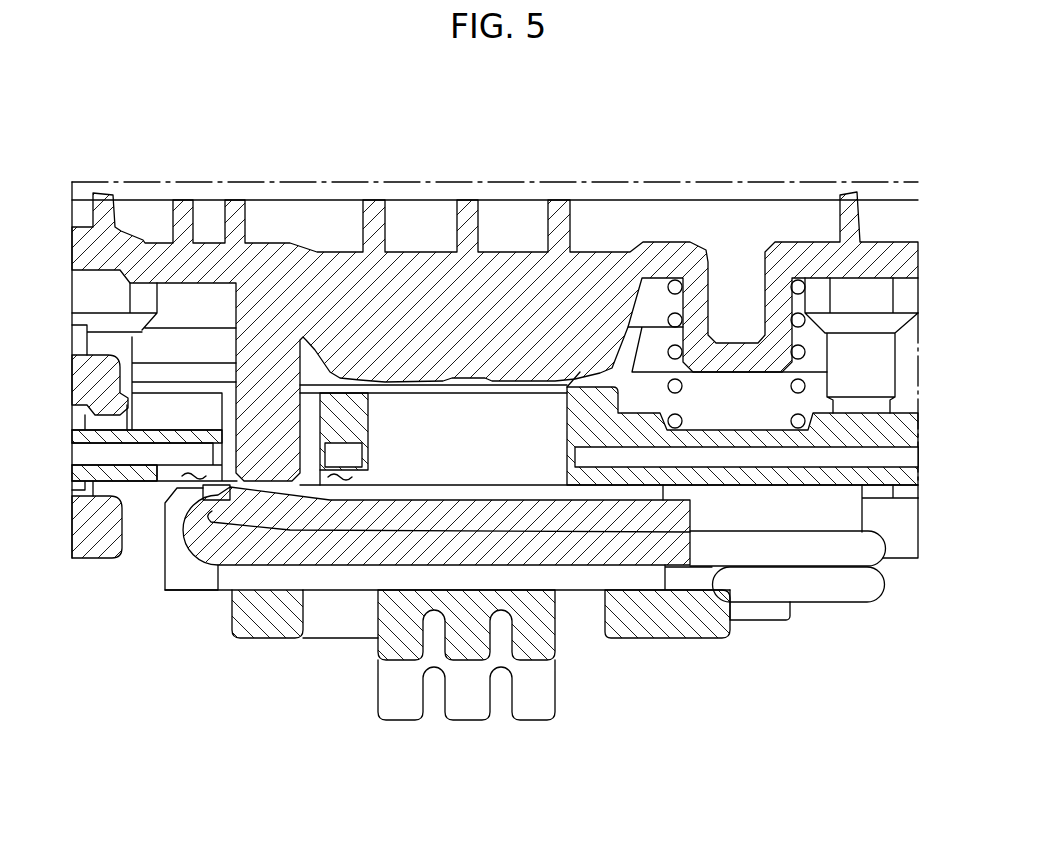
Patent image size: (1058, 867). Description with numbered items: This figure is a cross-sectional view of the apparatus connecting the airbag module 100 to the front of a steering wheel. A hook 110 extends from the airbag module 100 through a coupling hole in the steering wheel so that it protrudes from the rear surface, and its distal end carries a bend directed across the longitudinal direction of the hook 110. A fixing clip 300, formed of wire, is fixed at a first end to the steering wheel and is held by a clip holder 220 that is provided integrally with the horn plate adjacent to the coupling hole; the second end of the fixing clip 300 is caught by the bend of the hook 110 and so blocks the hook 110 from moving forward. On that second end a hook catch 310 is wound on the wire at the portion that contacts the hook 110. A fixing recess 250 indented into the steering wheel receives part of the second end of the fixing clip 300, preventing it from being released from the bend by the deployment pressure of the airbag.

The airbag module 100 is at (316, 218).
The hook 110 is at (467, 703).
The clip holder 220 is at (698, 622).
The fixing recess 250 is at (345, 478).
The fixing clip 300 is at (857, 601).
The hook catch 310 is at (587, 578).